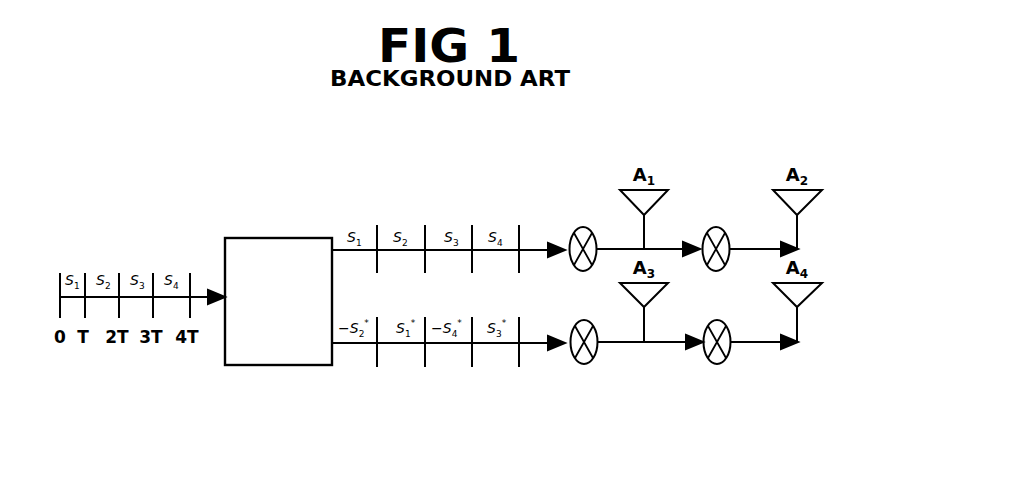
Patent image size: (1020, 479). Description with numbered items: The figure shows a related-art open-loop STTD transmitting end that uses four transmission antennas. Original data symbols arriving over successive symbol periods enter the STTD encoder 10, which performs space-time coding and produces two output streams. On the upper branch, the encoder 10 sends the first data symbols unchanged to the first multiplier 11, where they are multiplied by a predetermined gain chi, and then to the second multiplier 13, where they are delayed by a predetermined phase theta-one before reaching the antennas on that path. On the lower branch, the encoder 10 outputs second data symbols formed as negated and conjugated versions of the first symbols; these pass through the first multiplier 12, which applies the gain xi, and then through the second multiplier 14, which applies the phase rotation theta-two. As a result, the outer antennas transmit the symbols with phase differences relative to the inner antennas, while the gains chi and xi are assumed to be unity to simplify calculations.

The STTD encoder 10 is at (277, 238).
The first multiplier 11 is at (597, 236).
The first multiplier 12 is at (596, 355).
The second multiplier 13 is at (729, 238).
The second multiplier 14 is at (729, 355).